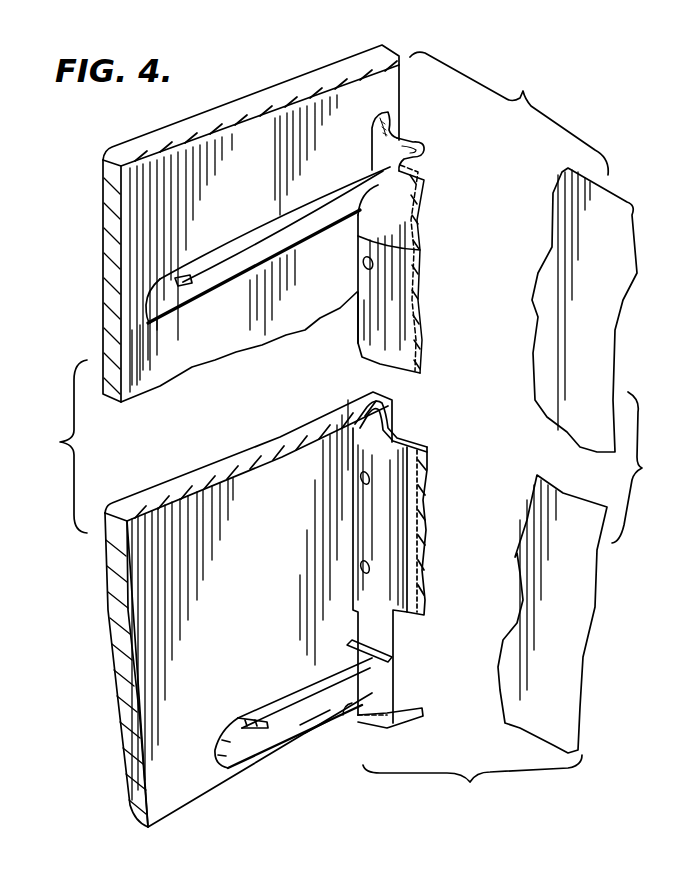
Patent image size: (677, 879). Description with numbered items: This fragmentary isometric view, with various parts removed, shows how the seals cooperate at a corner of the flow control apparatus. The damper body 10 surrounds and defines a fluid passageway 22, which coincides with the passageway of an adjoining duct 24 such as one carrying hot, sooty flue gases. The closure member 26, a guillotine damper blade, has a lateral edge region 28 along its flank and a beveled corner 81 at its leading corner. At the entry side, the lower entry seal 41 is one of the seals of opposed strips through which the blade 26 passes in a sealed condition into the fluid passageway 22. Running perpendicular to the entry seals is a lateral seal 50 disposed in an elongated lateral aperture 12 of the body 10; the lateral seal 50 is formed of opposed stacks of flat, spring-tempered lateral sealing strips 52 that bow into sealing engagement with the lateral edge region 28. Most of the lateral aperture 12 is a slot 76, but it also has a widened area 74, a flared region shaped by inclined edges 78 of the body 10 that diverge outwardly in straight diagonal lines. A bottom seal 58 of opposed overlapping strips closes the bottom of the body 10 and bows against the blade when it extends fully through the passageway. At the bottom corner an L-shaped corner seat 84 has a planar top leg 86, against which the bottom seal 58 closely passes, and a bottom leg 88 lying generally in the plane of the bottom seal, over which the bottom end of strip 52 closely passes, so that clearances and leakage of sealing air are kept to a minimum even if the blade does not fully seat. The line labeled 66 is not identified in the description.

The body 10 is at (432, 215).
The lateral aperture 12 is at (357, 322).
The fluid passageway 22 is at (275, 396).
The duct 24 is at (585, 410).
The closure member 26 is at (112, 392).
The lateral edge region 28 is at (368, 98).
The lower entry seal 41 is at (263, 228).
The lateral seal 50 is at (423, 127).
The lateral sealing strip 52 is at (378, 148).
The bottom seal 58 is at (287, 697).
The bend line 66 is at (420, 251).
The widened area 74 is at (380, 186).
The slot 76 is at (358, 248).
The inclined edge 78 is at (425, 165).
The beveled corner 81 is at (330, 727).
The L-shaped corner seat 84 is at (347, 710).
The planar top leg 86 is at (413, 712).
The bottom leg 88 is at (352, 655).